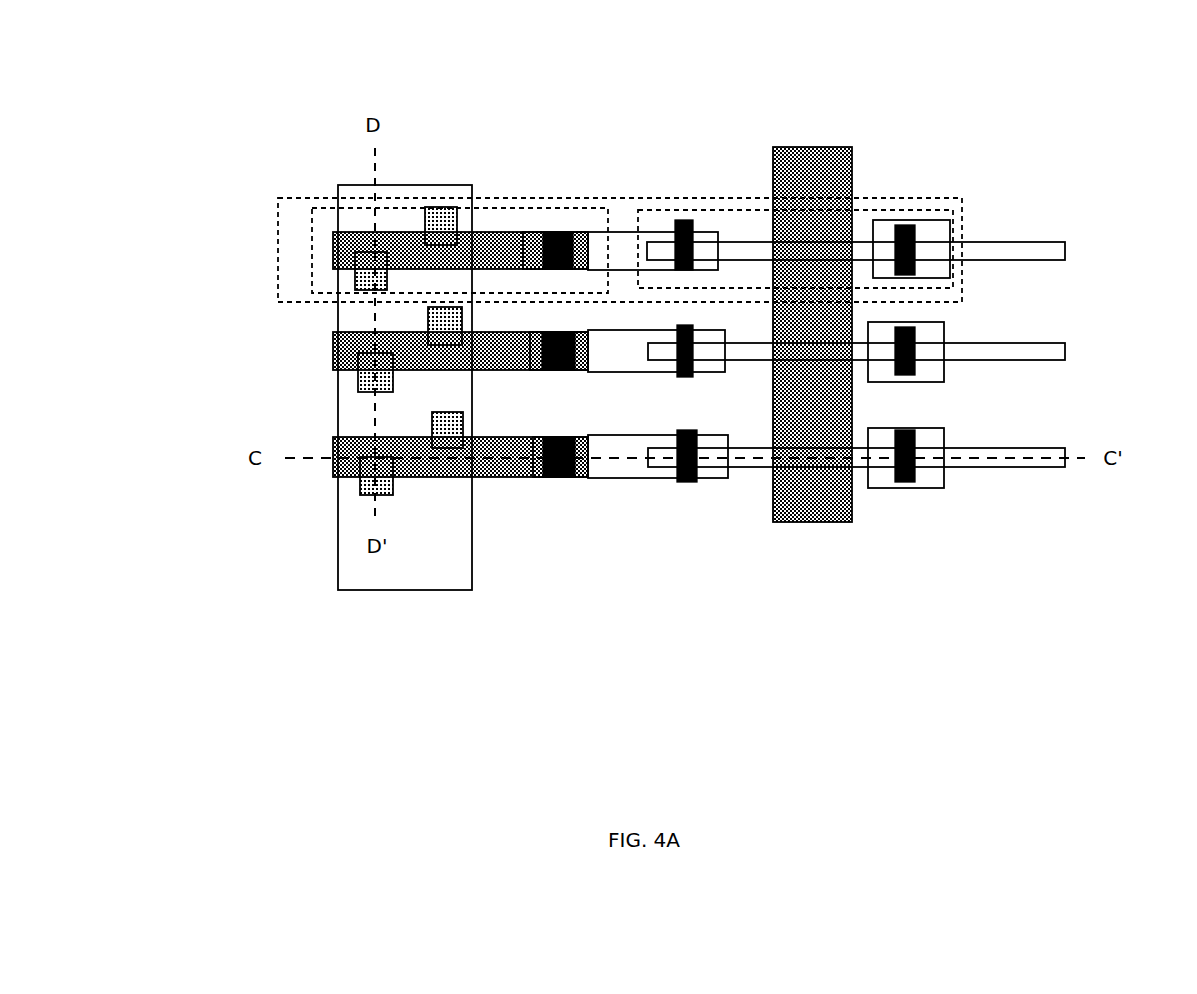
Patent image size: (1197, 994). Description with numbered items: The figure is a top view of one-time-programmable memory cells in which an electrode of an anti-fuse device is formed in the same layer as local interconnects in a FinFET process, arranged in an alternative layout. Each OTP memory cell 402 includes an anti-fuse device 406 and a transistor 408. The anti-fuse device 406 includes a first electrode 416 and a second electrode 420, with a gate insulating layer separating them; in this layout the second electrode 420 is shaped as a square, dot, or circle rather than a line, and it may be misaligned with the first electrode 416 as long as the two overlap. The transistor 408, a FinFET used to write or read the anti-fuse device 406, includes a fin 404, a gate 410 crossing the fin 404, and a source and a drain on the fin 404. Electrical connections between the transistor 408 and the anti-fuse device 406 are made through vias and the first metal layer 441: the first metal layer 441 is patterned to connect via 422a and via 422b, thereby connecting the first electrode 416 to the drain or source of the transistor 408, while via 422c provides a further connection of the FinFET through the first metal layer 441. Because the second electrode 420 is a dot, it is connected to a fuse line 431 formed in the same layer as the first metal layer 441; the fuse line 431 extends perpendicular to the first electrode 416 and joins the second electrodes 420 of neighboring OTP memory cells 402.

The OTP memory cell 402 is at (648, 195).
The fin 404 is at (1065, 245).
The anti-fuse device 406 is at (330, 210).
The transistor 408 is at (948, 205).
The gate 410 is at (812, 517).
The first electrode 416 is at (333, 258).
The second electrode 420 is at (383, 255).
The via 422a is at (548, 236).
The via 422b is at (692, 230).
The via 422c is at (900, 233).
The fuse line 431 is at (392, 590).
The first metal layer 441 is at (623, 627).